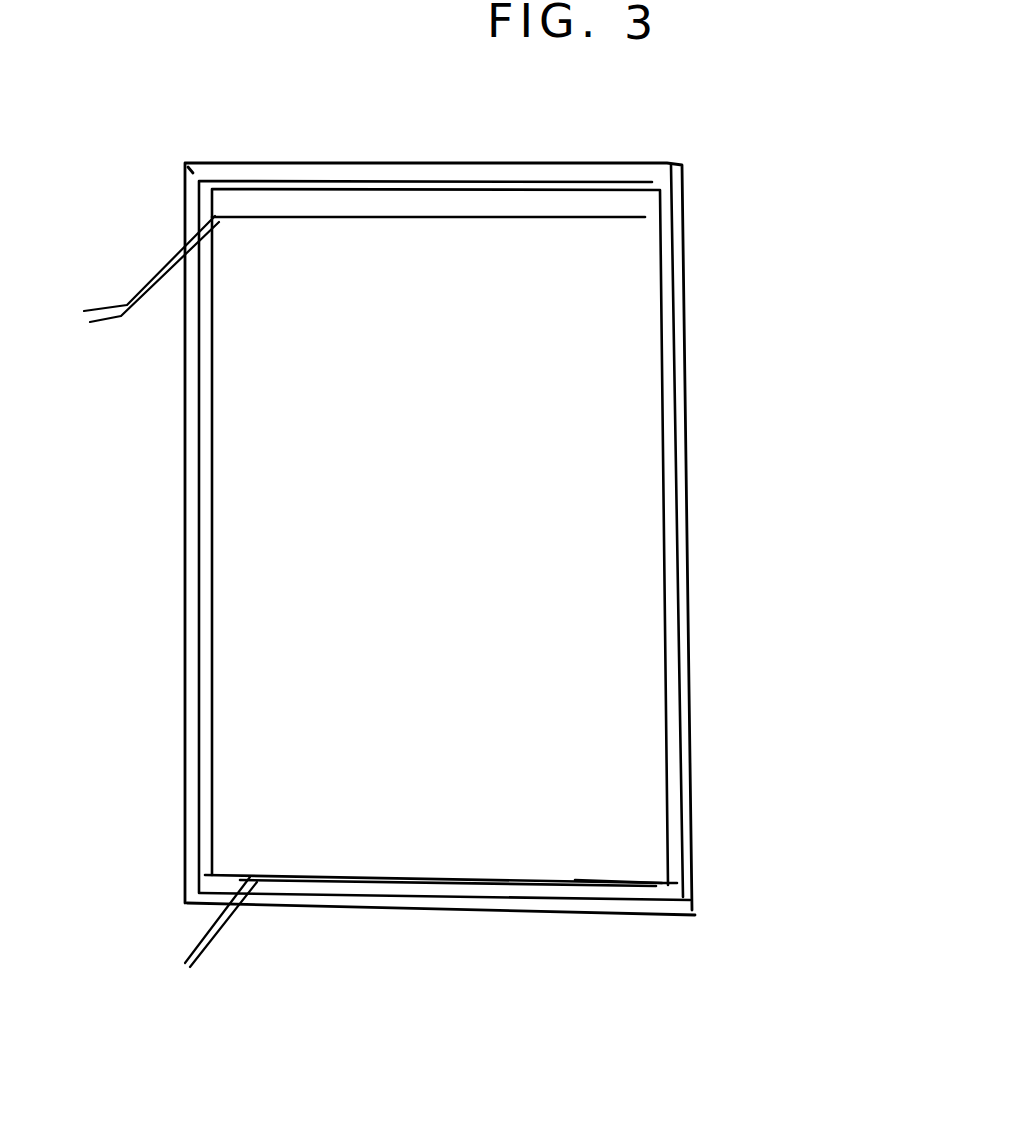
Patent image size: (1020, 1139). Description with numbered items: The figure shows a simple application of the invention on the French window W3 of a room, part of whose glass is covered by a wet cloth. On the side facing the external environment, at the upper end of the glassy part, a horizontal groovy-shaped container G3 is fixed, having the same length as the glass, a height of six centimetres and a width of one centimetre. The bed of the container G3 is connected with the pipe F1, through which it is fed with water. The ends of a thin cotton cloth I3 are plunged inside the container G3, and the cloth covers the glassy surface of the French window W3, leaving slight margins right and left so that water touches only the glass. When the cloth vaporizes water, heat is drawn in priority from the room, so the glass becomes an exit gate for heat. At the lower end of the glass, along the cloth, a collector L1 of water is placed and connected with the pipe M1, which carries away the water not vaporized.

The French window W3 is at (683, 499).
The groovy-shaped container G3 is at (655, 198).
The thin cotton cloth I3 is at (547, 601).
The collector L1 is at (677, 883).
The pipe F1 is at (170, 254).
The pipe M1 is at (208, 929).